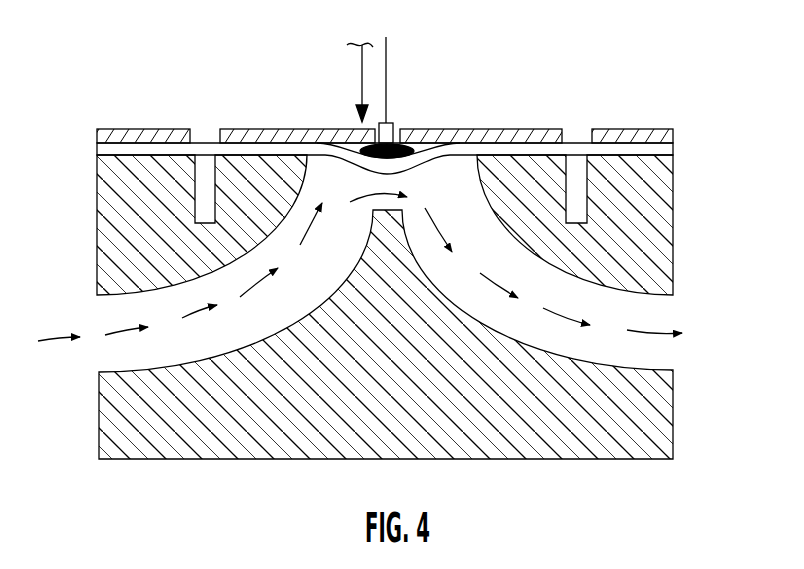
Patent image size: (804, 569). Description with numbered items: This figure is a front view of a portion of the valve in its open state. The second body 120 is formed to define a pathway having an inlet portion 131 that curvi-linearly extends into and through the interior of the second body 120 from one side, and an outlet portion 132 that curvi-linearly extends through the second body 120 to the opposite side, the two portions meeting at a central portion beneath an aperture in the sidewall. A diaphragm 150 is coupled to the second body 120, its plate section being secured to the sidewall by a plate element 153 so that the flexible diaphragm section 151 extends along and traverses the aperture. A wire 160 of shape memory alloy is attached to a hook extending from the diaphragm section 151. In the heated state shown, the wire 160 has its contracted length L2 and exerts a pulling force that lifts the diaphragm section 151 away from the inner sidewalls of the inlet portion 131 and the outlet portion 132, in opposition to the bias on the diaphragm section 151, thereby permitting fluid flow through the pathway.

The second body 120 is at (673, 272).
The inlet portion 131 is at (97, 360).
The outlet portion 132 is at (672, 345).
The diaphragm 150 is at (673, 150).
The diaphragm section 151 is at (490, 160).
The plate element 153 is at (673, 135).
The wire 160 is at (388, 85).
The contracted length L2 is at (362, 91).